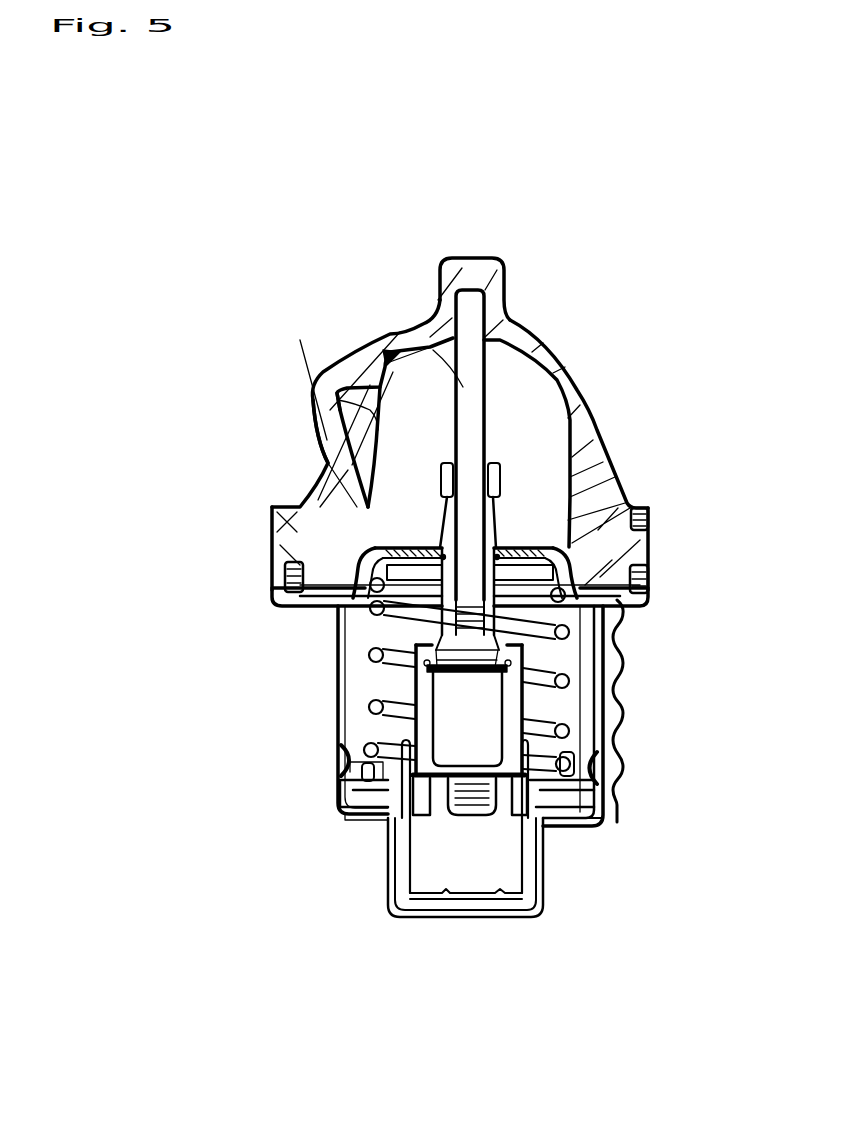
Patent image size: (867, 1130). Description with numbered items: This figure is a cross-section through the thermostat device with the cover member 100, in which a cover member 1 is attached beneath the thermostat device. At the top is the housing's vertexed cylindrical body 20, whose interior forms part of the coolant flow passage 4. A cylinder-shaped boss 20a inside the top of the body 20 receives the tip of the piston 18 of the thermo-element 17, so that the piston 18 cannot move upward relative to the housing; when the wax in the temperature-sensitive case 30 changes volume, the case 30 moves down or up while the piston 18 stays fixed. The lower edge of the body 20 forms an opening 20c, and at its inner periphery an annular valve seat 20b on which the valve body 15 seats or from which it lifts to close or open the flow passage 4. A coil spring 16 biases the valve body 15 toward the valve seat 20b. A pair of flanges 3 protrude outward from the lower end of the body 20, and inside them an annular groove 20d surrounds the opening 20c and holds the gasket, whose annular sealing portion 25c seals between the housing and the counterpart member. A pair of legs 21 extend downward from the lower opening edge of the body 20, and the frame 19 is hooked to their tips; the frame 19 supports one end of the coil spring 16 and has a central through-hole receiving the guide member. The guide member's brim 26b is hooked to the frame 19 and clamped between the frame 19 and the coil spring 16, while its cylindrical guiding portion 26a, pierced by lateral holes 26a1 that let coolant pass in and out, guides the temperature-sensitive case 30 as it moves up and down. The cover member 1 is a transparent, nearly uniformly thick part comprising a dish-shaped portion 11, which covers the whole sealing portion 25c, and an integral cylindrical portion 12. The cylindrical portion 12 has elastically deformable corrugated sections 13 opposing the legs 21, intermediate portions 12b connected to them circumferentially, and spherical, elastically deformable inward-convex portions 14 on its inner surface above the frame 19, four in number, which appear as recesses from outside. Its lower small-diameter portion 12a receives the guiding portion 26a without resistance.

The thermostat device with the cover member 100 is at (303, 188).
The cover member 1 is at (609, 836).
The flange 3 is at (278, 514).
The flow passage 4 is at (543, 408).
The dish-shaped portion 11 is at (302, 607).
The cylindrical portion 12 is at (338, 790).
The small-diameter portion 12a is at (472, 920).
The intermediate portion 12b is at (340, 688).
The corrugated section 13 is at (617, 808).
The inward-convex portion 14 is at (340, 768).
The valve body 15 is at (575, 465).
The coil spring 16 is at (562, 738).
The thermo-element 17 is at (397, 737).
The piston 18 is at (468, 388).
The frame 19 is at (330, 808).
The body 20 is at (558, 358).
The boss 20a is at (487, 294).
The valve seat 20b is at (335, 538).
The opening 20c is at (327, 440).
The groove 20d is at (293, 573).
The leg 21 is at (577, 668).
The sealing portion 25c is at (296, 575).
The guiding portion 26a is at (536, 872).
The lateral hole 26a1 is at (513, 818).
The brim 26b is at (372, 784).
The temperature-sensitive case 30 is at (420, 676).